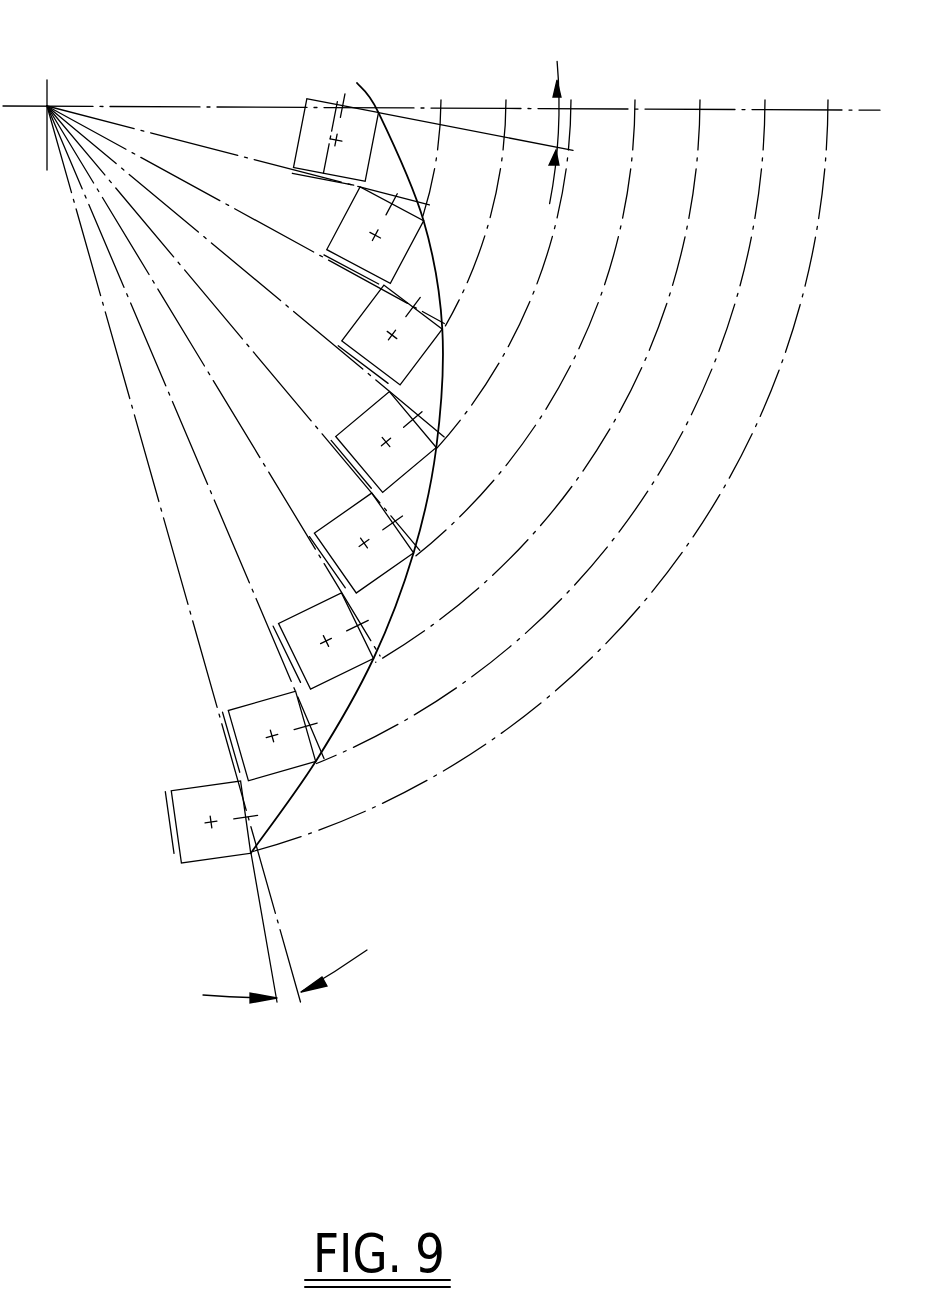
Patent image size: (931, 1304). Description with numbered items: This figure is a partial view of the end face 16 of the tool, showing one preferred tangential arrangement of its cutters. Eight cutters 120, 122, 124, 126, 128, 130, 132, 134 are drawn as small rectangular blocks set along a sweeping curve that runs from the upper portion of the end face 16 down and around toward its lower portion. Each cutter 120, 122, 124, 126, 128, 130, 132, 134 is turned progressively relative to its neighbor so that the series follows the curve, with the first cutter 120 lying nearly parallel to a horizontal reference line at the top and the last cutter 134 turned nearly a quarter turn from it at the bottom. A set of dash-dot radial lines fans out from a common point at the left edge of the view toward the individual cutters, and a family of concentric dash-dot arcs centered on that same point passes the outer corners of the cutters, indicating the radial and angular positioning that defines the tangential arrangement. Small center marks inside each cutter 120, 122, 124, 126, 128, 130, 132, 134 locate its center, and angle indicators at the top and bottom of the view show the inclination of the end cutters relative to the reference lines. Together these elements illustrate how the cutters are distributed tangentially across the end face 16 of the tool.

The end face 16 is at (490, 48).
The cutter 120 is at (300, 140).
The cutter 122 is at (339, 230).
The cutter 124 is at (377, 327).
The cutter 126 is at (377, 428).
The cutter 128 is at (352, 528).
The cutter 130 is at (328, 620).
The cutter 132 is at (282, 713).
The cutter 134 is at (228, 792).